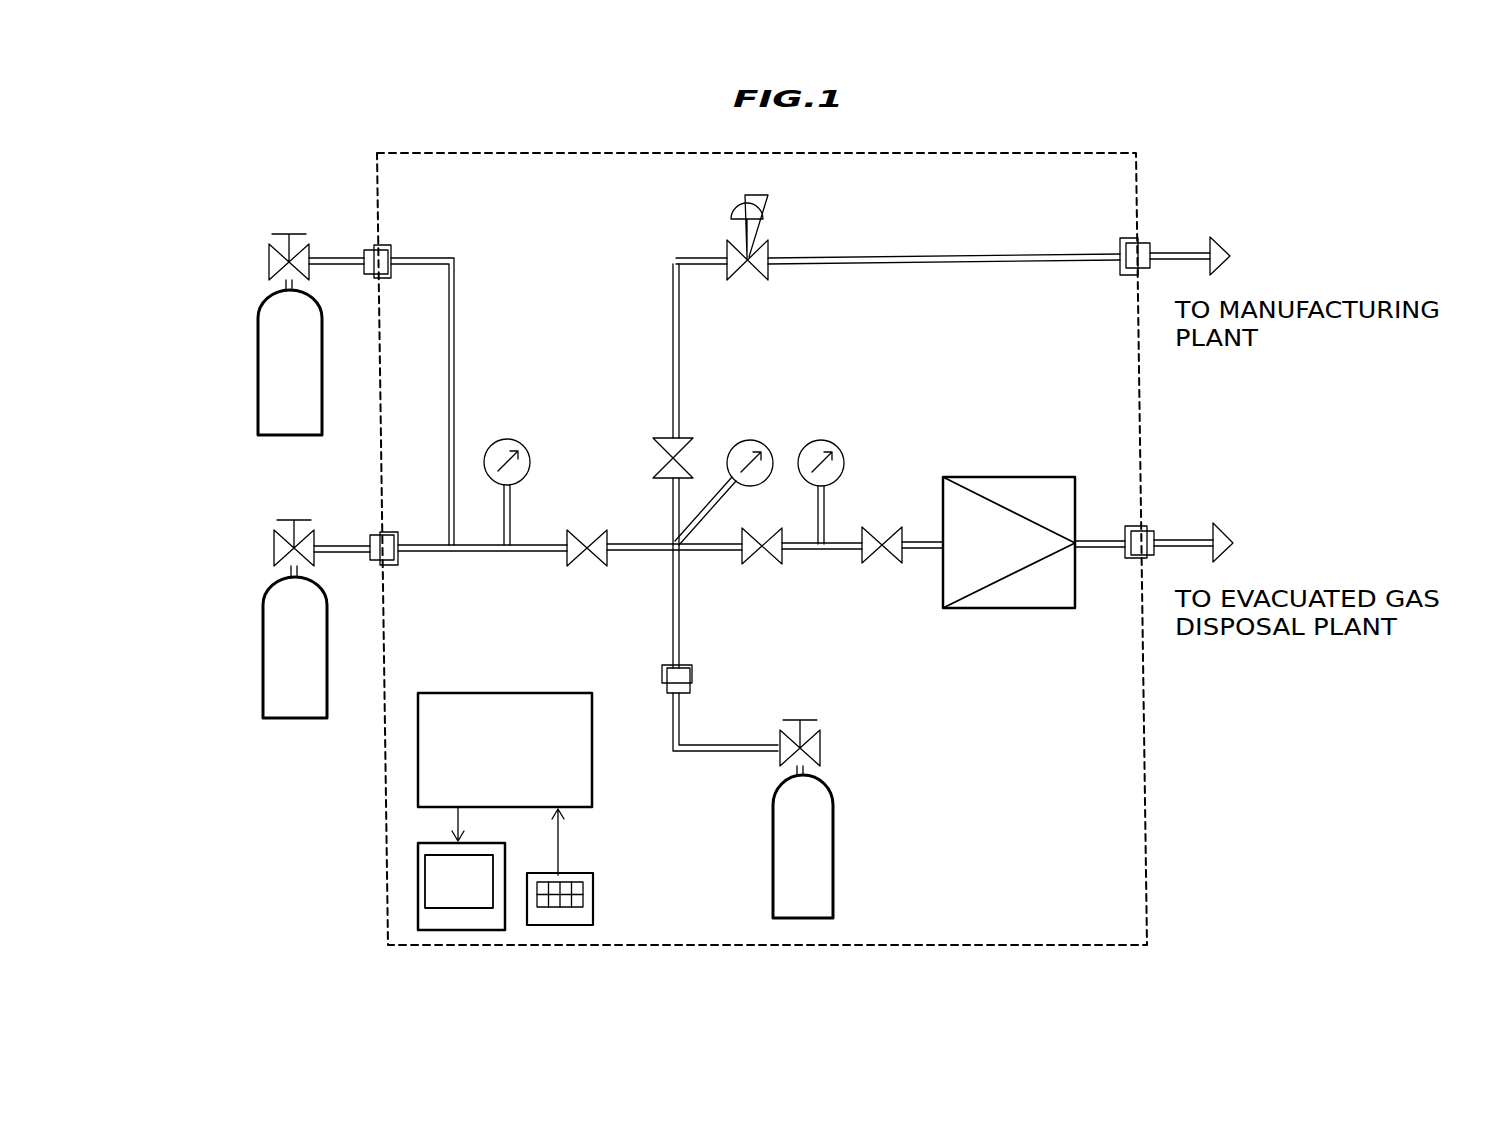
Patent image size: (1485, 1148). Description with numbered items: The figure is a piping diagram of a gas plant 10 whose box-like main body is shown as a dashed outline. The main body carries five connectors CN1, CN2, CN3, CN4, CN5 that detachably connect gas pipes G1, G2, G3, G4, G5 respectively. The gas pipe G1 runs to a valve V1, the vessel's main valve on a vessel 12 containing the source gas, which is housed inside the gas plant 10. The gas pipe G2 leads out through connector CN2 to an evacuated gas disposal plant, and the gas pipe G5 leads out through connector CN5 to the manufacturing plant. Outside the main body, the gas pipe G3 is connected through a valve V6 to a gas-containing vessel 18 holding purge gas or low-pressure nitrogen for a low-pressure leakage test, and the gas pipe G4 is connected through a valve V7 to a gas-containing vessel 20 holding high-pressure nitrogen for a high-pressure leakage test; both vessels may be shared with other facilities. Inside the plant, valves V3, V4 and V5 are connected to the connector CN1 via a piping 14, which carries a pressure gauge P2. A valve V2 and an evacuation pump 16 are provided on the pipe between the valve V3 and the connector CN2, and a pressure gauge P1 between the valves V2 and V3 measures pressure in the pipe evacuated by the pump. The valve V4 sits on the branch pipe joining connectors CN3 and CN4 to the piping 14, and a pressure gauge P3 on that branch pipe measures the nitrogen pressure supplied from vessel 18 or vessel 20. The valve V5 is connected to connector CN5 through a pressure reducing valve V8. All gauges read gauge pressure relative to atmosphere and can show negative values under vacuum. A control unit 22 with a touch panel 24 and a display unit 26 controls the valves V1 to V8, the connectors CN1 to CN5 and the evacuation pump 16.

The gas plant 10 is at (1147, 840).
The vessel 12 is at (833, 858).
The piping 14 is at (671, 606).
The evacuation pump 16 is at (1030, 610).
The gas-containing vessel 18 is at (258, 375).
The gas-containing vessel 20 is at (263, 660).
The control unit 22 is at (418, 752).
The touch panel 24 is at (594, 896).
The display unit 26 is at (418, 887).
The valve V1 is at (822, 746).
The valve V2 is at (890, 564).
The valve V3 is at (771, 565).
The valve V4 is at (594, 567).
The valve V5 is at (691, 449).
The valve V6 is at (268, 262).
The valve V7 is at (273, 549).
The pressure reducing valve V8 is at (769, 250).
The pressure gauge P1 is at (839, 444).
The pressure gauge P2 is at (764, 442).
The pressure gauge P3 is at (525, 446).
The connector CN1 is at (691, 672).
The connector CN2 is at (1146, 529).
The connector CN3 is at (366, 250).
The connector CN4 is at (377, 535).
The connector CN5 is at (1143, 243).
The gas pipe G1 is at (708, 755).
The gas pipe G2 is at (1192, 540).
The gas pipe G3 is at (338, 266).
The gas pipe G4 is at (340, 556).
The gas pipe G5 is at (1183, 252).